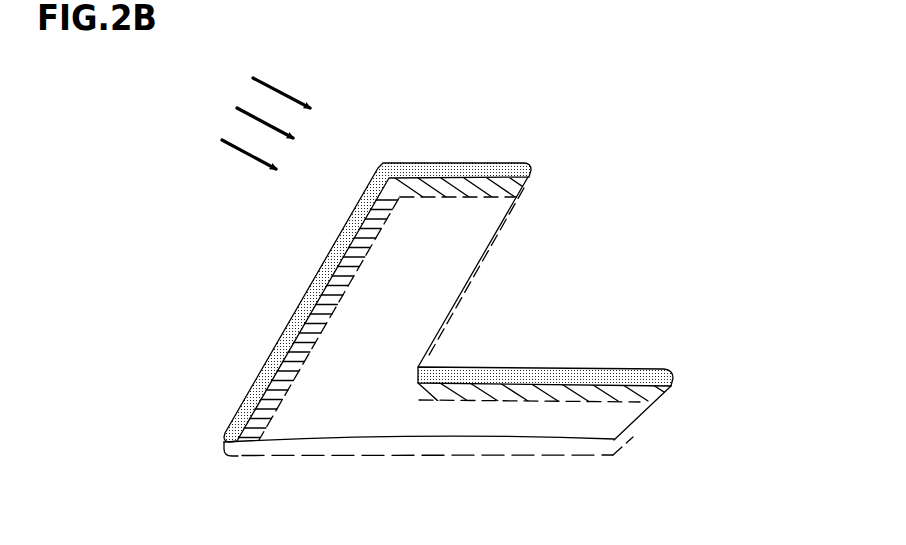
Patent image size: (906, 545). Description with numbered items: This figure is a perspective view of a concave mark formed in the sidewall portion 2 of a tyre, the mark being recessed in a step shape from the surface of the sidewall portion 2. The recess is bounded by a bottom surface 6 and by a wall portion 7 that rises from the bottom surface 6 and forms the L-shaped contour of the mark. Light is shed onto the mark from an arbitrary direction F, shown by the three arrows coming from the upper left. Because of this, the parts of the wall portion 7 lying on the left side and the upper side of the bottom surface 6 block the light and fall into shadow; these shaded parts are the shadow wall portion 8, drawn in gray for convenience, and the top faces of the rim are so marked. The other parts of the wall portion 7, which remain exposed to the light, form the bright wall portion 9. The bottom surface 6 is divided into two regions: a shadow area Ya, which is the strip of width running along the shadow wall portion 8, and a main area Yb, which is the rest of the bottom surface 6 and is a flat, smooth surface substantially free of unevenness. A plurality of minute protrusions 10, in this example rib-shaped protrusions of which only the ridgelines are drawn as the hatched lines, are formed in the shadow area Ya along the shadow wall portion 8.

The sidewall portion 2 is at (678, 283).
The bottom surface 6 is at (172, 303).
The wall portion 7 is at (304, 304).
The shadow wall portion 8 is at (432, 168).
The bright wall portion 9 is at (450, 302).
The minute protrusions 10 is at (480, 190).
The shadow area Ya is at (272, 392).
The main area Yb is at (340, 373).
The direction of light F is at (287, 92).